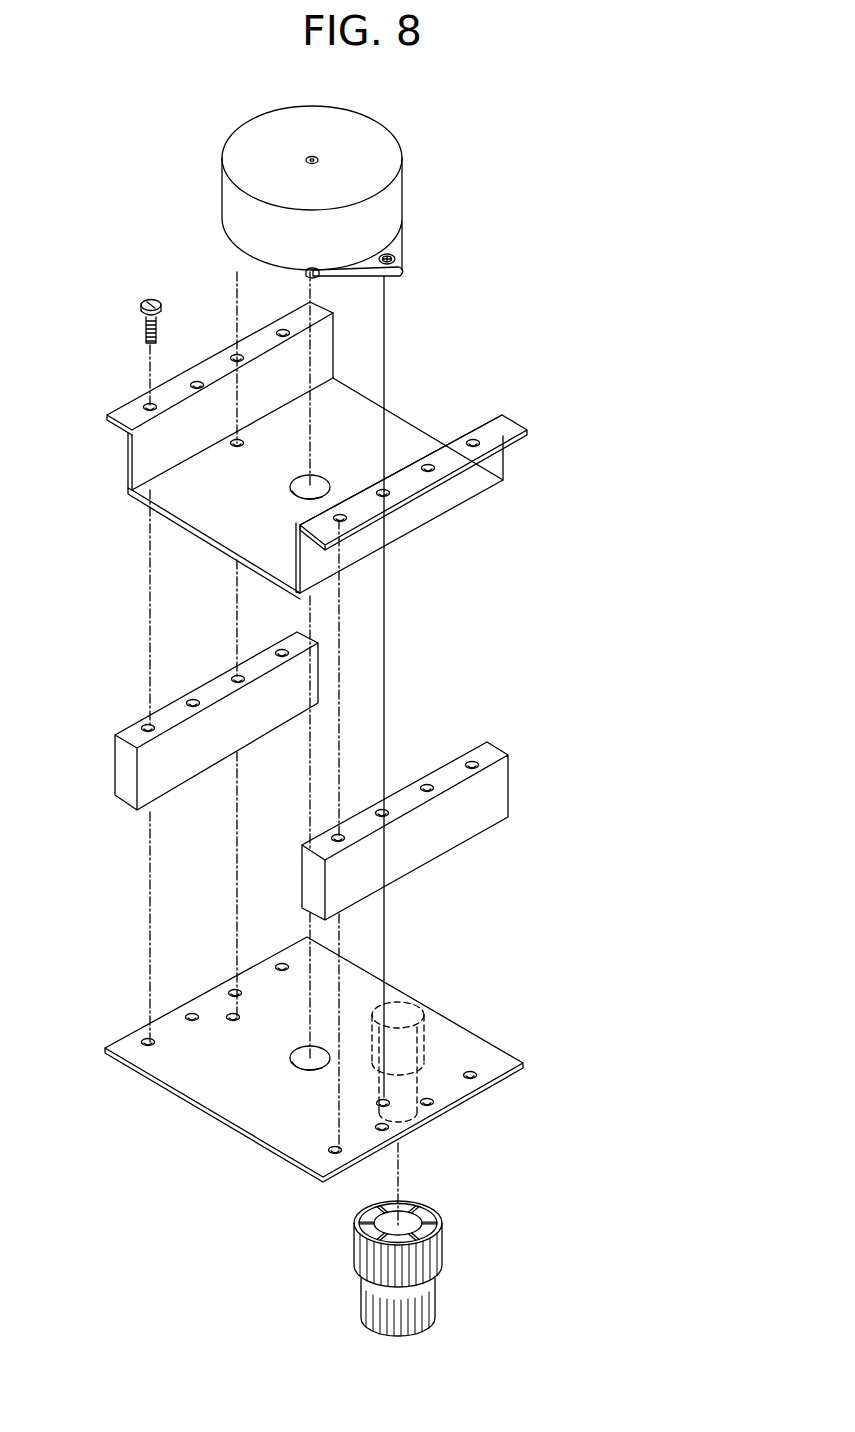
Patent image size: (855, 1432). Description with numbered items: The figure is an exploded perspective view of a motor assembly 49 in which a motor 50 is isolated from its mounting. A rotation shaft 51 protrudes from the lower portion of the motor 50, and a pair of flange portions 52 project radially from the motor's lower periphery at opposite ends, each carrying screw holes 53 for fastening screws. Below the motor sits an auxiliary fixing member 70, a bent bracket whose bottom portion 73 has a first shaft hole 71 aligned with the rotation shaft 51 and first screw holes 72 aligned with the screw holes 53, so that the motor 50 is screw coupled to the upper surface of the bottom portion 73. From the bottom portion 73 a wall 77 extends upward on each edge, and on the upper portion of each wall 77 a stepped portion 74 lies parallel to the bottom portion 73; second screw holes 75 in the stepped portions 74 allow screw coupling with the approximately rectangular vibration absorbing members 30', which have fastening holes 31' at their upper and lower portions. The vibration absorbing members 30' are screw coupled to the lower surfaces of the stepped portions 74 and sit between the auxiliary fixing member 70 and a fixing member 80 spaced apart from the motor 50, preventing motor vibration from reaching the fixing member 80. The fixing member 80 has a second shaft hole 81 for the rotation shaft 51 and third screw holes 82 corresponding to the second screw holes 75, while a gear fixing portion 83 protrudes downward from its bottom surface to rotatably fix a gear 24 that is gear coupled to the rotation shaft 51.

The motor assembly 49 is at (700, 597).
The motor 50 is at (425, 165).
The rotation shaft 51 is at (319, 277).
The flange portions 52 is at (404, 268).
The screw holes 53 is at (396, 254).
The auxiliary fixing member 70 is at (320, 450).
The first shaft hole 71 is at (279, 488).
The first screw holes 72 is at (231, 439).
The bottom portion 73 is at (180, 500).
The stepped portions 74 is at (510, 434).
The second screw holes 75 is at (148, 399).
The wall 77 is at (417, 520).
The vibration absorbing members 30' is at (288, 776).
The fastening holes 31' is at (283, 743).
The fixing member 80 is at (304, 1040).
The second shaft hole 81 is at (297, 1054).
The third screw holes 82 is at (143, 1037).
The gear fixing portion 83 is at (423, 1053).
The gear 24 is at (437, 1258).